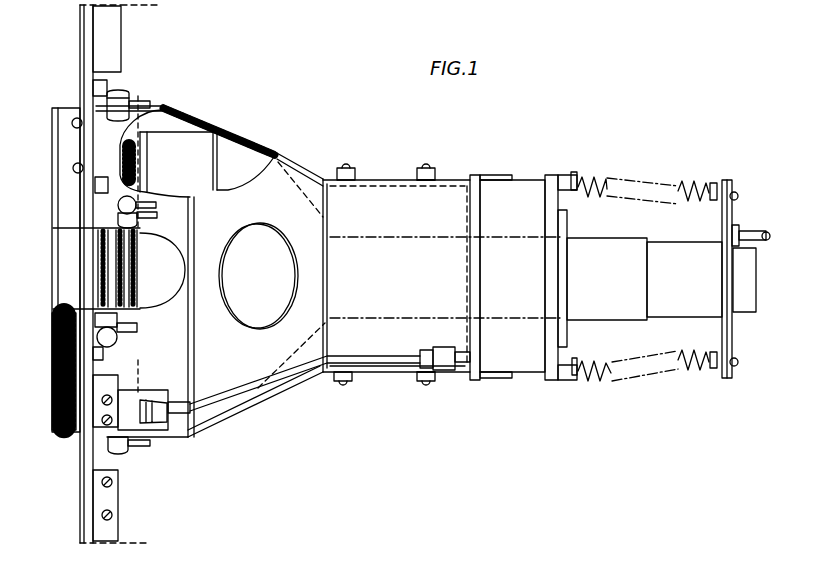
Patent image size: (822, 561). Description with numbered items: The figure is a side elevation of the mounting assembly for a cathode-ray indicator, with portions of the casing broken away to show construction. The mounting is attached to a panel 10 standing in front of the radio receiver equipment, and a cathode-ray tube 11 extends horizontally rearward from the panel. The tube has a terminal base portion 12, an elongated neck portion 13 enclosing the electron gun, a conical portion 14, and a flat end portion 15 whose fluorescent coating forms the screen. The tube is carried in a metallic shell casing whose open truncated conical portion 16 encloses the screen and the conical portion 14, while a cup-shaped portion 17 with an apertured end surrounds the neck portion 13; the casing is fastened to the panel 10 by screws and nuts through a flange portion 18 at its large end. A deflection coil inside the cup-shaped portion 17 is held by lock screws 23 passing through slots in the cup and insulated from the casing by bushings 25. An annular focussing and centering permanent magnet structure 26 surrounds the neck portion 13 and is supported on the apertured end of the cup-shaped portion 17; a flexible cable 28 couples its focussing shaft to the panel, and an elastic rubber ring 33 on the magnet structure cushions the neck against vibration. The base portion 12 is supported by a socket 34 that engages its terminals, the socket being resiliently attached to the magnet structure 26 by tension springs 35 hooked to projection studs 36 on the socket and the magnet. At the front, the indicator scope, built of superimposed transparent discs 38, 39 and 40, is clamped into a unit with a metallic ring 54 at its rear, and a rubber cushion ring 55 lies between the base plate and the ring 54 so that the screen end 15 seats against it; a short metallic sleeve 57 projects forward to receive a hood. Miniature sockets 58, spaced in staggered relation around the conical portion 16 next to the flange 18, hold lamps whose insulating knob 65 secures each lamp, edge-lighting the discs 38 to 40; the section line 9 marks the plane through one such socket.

The section line 9- 9 is at (105, 90).
The panel 10 is at (92, 40).
The cathode-ray tube 11 is at (243, 317).
The terminal base portion 12 is at (672, 255).
The neck portion 13 is at (600, 243).
The conical portion 14 is at (237, 158).
The flat end portion 15 is at (148, 138).
The truncated conical portion 16 is at (297, 167).
The cup-shaped portion 17 is at (377, 182).
The flange portion 18 is at (95, 82).
The lock screws 23 is at (345, 168).
The bushings 25 is at (436, 178).
The focussing and centering permanent magnet structure 26 is at (522, 358).
The flexible cable 28 is at (300, 375).
The elastic rubber ring 33 is at (567, 280).
The socket 34 is at (745, 284).
The tension springs 35 is at (603, 183).
The projection studs 36 is at (574, 182).
The disc 38 is at (123, 243).
The disc 39 is at (117, 260).
The disc 40 is at (107, 287).
The metallic ring 54 is at (149, 180).
The rubber cushion ring 55 is at (142, 160).
The metallic sleeve 57 is at (62, 118).
The miniature sockets 58 is at (132, 100).
The insulating knob 65 is at (134, 206).